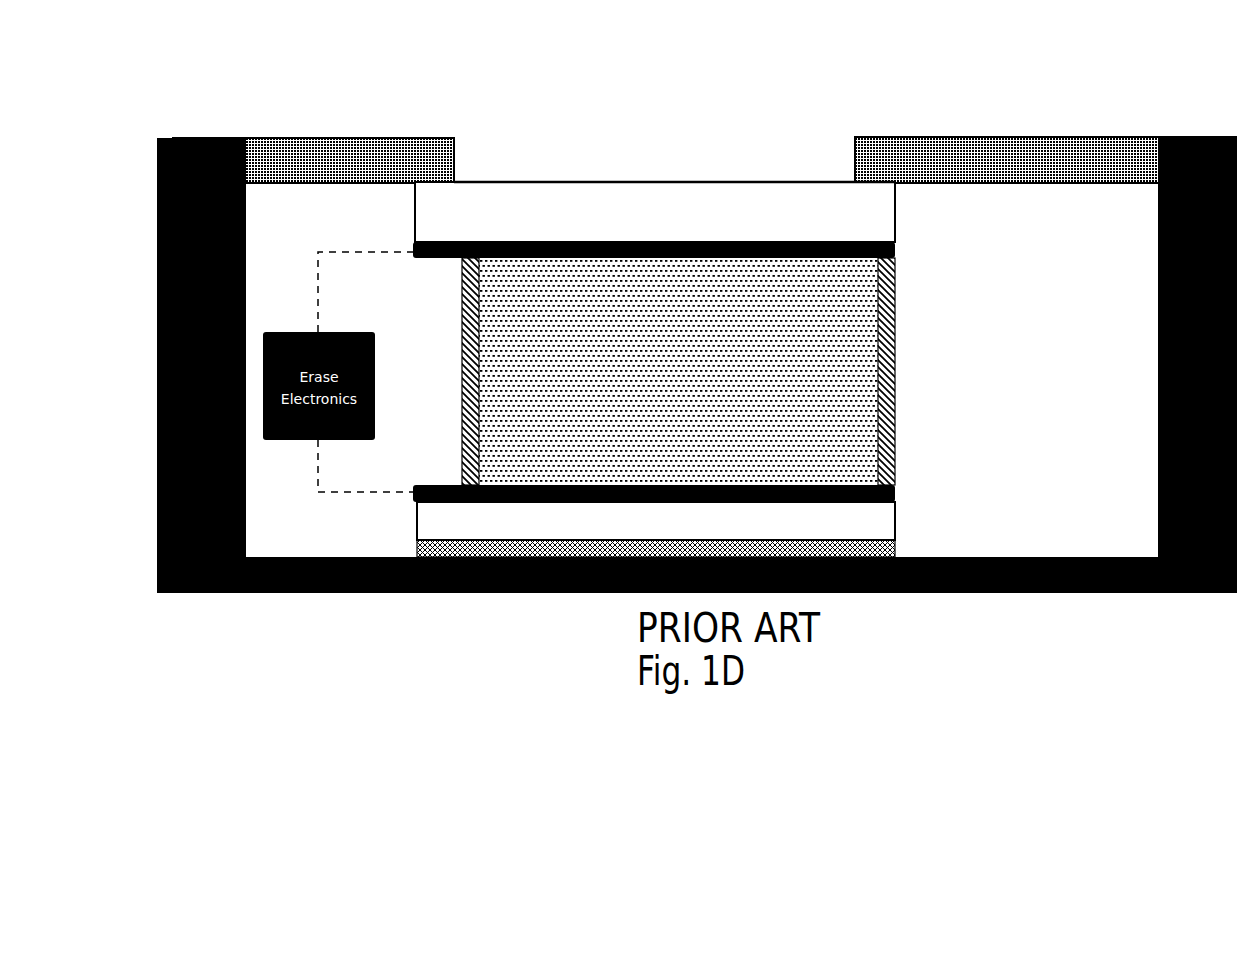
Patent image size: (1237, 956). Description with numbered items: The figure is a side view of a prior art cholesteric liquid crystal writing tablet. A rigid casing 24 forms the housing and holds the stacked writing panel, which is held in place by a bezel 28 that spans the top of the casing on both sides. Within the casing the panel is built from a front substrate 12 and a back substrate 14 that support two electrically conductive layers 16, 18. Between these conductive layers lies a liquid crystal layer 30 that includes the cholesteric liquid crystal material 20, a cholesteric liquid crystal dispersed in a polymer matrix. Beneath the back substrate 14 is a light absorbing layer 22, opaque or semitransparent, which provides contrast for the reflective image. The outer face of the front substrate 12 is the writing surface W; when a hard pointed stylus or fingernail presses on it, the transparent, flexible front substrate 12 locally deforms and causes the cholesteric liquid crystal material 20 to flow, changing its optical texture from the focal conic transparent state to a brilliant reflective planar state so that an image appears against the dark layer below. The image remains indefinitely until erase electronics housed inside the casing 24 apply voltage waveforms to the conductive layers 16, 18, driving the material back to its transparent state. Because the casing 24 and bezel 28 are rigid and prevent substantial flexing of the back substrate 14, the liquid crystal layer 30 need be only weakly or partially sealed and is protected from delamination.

The front substrate 12 is at (897, 203).
The back substrate 14 is at (897, 522).
The electrically conductive layer 16 is at (895, 258).
The electrically conductive layer 18 is at (895, 485).
The cholesteric liquid crystal material 20 is at (810, 297).
The light absorbing layer 22 is at (897, 545).
The rigid casing 24 is at (1000, 595).
The bezel 28 is at (995, 138).
The liquid crystal layer 30 is at (895, 327).
The writing surface W is at (752, 180).